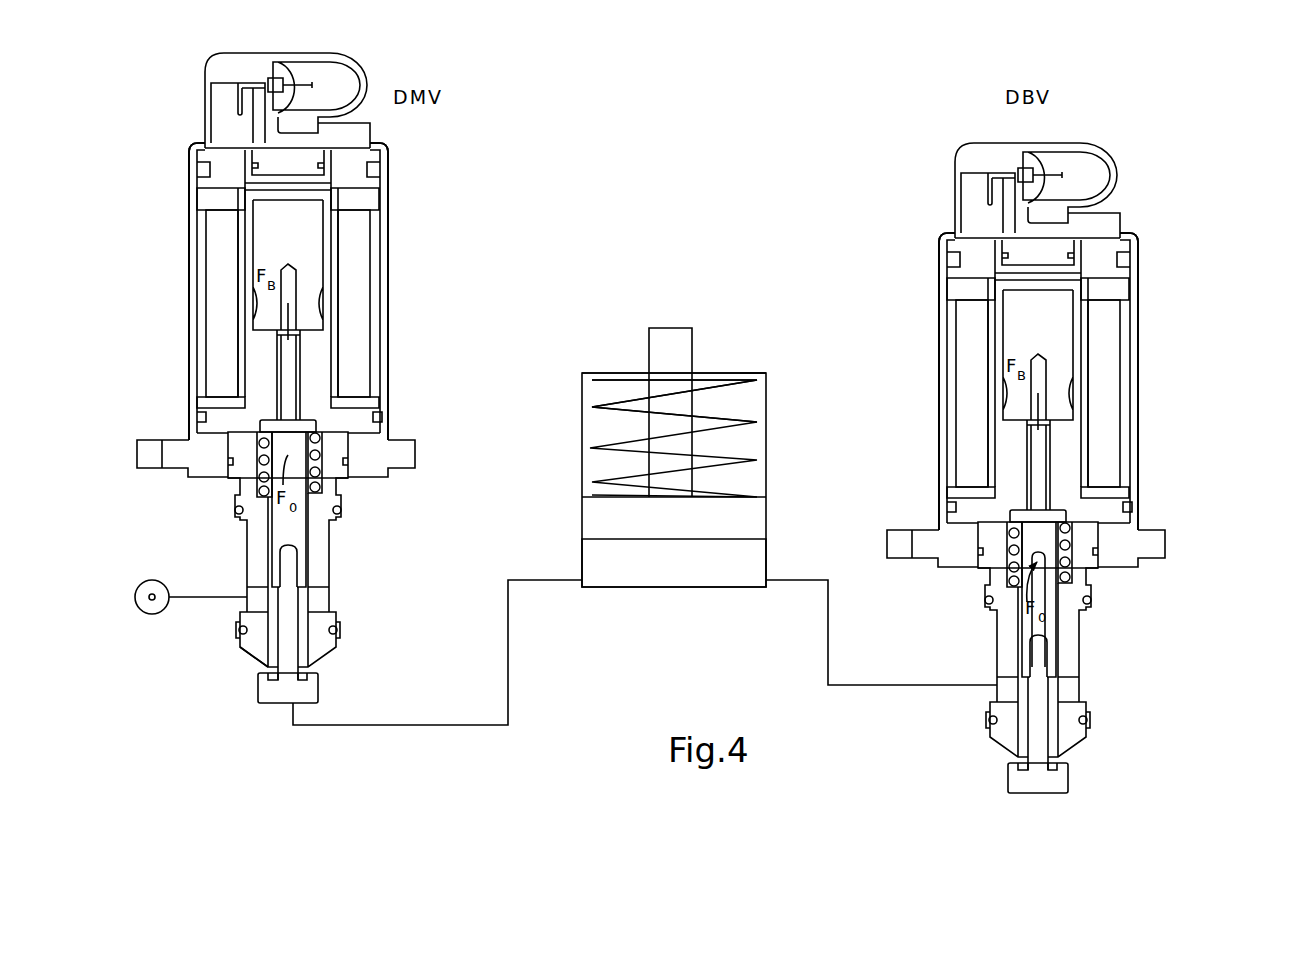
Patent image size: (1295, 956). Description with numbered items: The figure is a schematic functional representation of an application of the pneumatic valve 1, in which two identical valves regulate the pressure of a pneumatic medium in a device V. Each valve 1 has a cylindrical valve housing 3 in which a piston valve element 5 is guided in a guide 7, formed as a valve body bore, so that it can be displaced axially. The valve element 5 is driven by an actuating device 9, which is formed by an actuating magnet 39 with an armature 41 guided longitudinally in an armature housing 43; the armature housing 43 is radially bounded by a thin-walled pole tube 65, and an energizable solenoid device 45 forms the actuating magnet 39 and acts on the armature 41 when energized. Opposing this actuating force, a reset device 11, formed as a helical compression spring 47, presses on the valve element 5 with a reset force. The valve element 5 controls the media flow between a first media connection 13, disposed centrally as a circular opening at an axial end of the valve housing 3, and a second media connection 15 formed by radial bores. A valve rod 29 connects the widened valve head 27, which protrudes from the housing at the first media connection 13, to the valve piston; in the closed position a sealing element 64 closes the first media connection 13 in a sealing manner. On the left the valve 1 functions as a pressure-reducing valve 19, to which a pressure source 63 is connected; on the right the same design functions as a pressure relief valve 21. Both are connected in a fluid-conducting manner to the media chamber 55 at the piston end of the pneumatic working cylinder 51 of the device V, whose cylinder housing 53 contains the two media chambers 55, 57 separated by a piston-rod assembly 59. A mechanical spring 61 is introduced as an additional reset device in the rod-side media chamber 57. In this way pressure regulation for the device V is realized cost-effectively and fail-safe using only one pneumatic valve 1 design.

The pneumatic valve 1 is at (466, 175).
The valve housing 3 is at (323, 547).
The piston valve element 5 is at (287, 529).
The guide 7 is at (310, 563).
The actuating device 9 is at (396, 362).
The reset device 11 is at (334, 447).
The first media connection 13 is at (268, 667).
The second media connection 15 is at (225, 597).
The pressure-reducing valve 19 is at (463, 303).
The pressure relief valve 21 is at (915, 248).
The valve head 27 is at (308, 693).
The valve rod 29 is at (288, 633).
The actuating magnet 39 is at (363, 377).
The armature 41 is at (307, 287).
The armature housing 43 is at (318, 183).
The solenoid device 45 is at (384, 330).
The helical compression spring 47 is at (317, 472).
The pneumatic working cylinder 51 is at (767, 430).
The cylinder housing 53 is at (767, 374).
The media chamber 55 is at (727, 564).
The media chamber 57 is at (627, 390).
The piston-rod assembly 59 is at (672, 345).
The mechanical spring 61 is at (715, 380).
The pressure source 63 is at (152, 594).
The sealing element 64 is at (307, 668).
The pole tube 65 is at (327, 217).
The device V is at (760, 372).